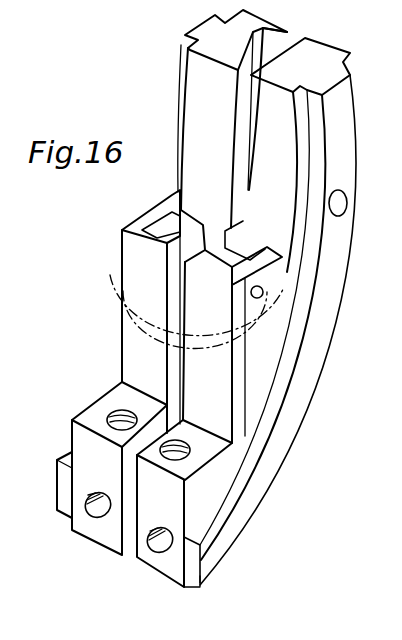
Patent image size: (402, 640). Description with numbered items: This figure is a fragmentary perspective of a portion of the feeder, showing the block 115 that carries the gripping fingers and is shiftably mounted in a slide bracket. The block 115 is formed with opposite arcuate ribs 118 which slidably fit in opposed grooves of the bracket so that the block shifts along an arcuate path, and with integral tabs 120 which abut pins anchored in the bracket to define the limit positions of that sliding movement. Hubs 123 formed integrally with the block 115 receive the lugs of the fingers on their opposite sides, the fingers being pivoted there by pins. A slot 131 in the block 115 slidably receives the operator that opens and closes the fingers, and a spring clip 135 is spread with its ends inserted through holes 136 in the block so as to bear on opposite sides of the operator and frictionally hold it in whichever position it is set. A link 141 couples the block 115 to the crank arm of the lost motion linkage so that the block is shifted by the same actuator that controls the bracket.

The block 115 is at (134, 564).
The arcuate ribs 118 is at (58, 480).
The tabs 120 is at (355, 80).
The hubs 123 is at (96, 528).
The slot 131 is at (160, 232).
The spring clip 135 is at (108, 298).
The holes 136 is at (262, 290).
The link 141 is at (288, 33).